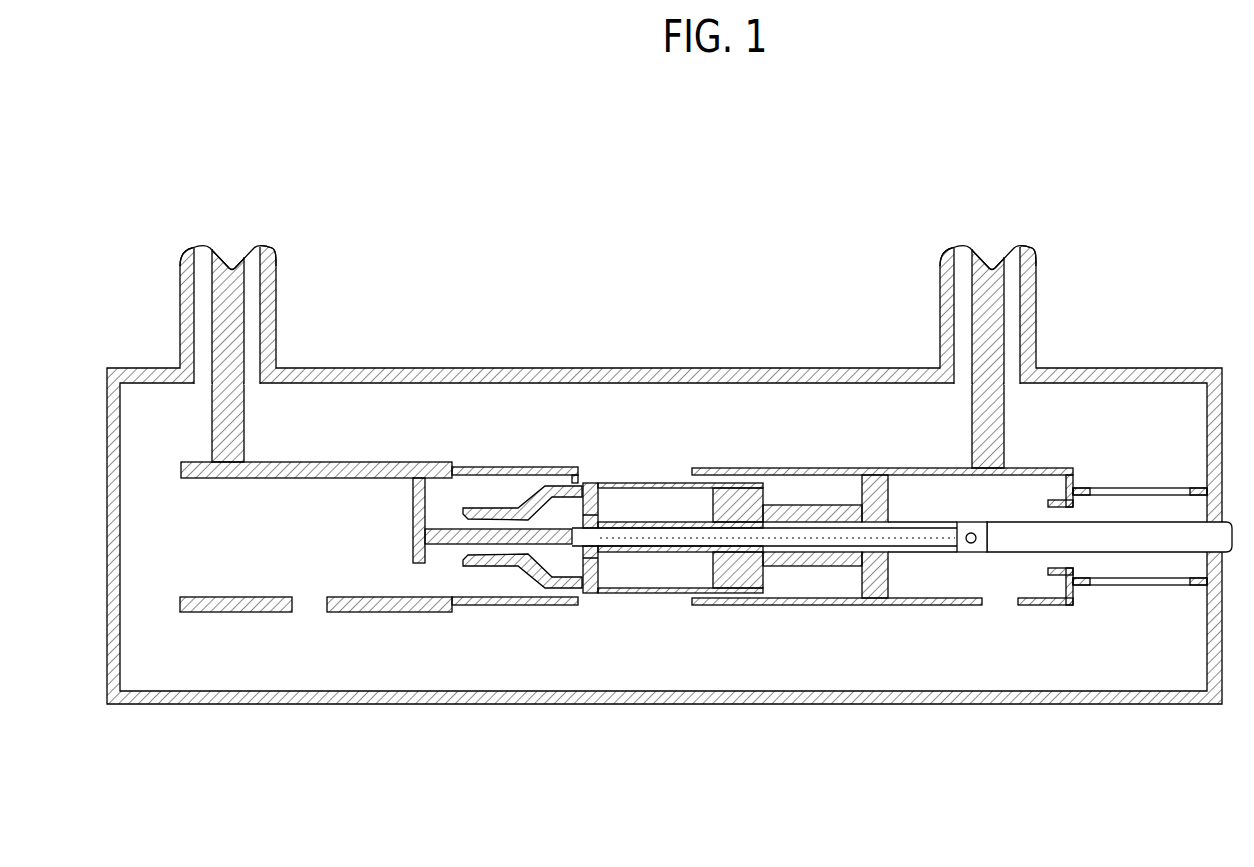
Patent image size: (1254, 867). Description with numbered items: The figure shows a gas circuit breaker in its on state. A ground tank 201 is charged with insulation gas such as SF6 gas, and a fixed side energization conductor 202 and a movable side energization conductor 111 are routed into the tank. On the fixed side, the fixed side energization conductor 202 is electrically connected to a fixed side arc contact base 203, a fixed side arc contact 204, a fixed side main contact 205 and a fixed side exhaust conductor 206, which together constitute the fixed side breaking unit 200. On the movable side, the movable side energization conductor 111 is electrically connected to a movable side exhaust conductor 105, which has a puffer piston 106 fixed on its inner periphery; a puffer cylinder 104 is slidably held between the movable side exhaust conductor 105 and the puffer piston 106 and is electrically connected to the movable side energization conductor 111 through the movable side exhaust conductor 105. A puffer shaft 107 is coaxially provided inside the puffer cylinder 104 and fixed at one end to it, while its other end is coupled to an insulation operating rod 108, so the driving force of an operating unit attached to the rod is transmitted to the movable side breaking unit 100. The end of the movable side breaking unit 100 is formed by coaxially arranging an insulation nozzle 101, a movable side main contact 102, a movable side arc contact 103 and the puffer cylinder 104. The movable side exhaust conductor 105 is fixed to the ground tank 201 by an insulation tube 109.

The movable side breaking unit 100 is at (710, 504).
The insulation nozzle 101 is at (527, 506).
The movable side main contact 102 is at (575, 482).
The movable side arc contact 103 is at (605, 483).
The puffer cylinder 104 is at (630, 487).
The movable side exhaust conductor 105 is at (813, 605).
The puffer piston 106 is at (868, 600).
The puffer shaft 107 is at (948, 553).
The insulation operating rod 108 is at (1197, 553).
The insulation tube 109 is at (1133, 584).
The movable side energization conductor 111 is at (987, 273).
The fixed side breaking unit 200 is at (461, 657).
The ground tank 201 is at (445, 368).
The fixed side energization conductor 202 is at (233, 262).
The fixed side arc contact base 203 is at (413, 540).
The fixed side arc contact 204 is at (470, 545).
The fixed side main contact 205 is at (528, 590).
The fixed side exhaust conductor 206 is at (267, 604).